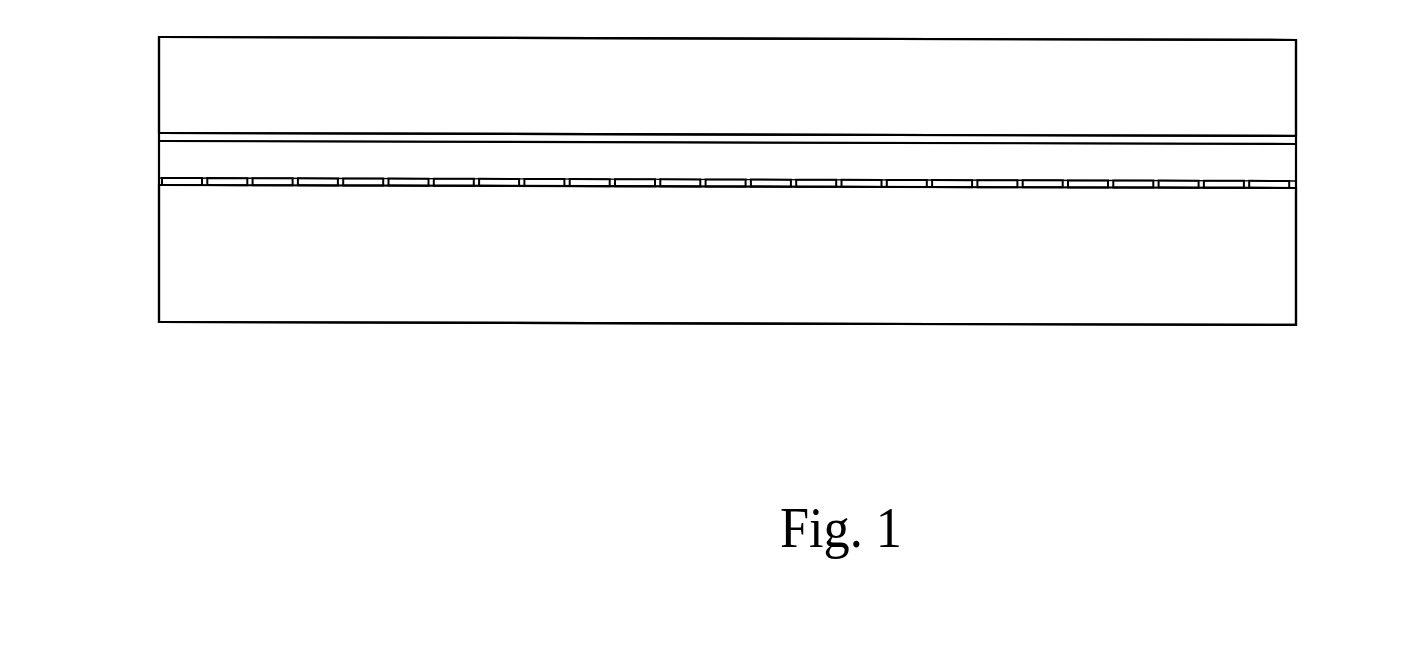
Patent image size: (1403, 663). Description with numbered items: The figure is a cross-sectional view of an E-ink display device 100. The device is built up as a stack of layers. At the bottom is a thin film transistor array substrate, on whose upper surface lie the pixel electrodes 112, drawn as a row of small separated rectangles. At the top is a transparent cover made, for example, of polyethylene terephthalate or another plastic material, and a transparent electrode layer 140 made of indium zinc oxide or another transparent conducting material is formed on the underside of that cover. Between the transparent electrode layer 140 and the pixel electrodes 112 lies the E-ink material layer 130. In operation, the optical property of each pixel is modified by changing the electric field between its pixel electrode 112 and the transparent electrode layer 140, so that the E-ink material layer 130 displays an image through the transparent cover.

The E-ink display device 100 is at (723, 409).
The pixel electrode 112 is at (159, 184).
The E-ink material layer 130 is at (165, 163).
The transparent electrode layer 140 is at (159, 137).